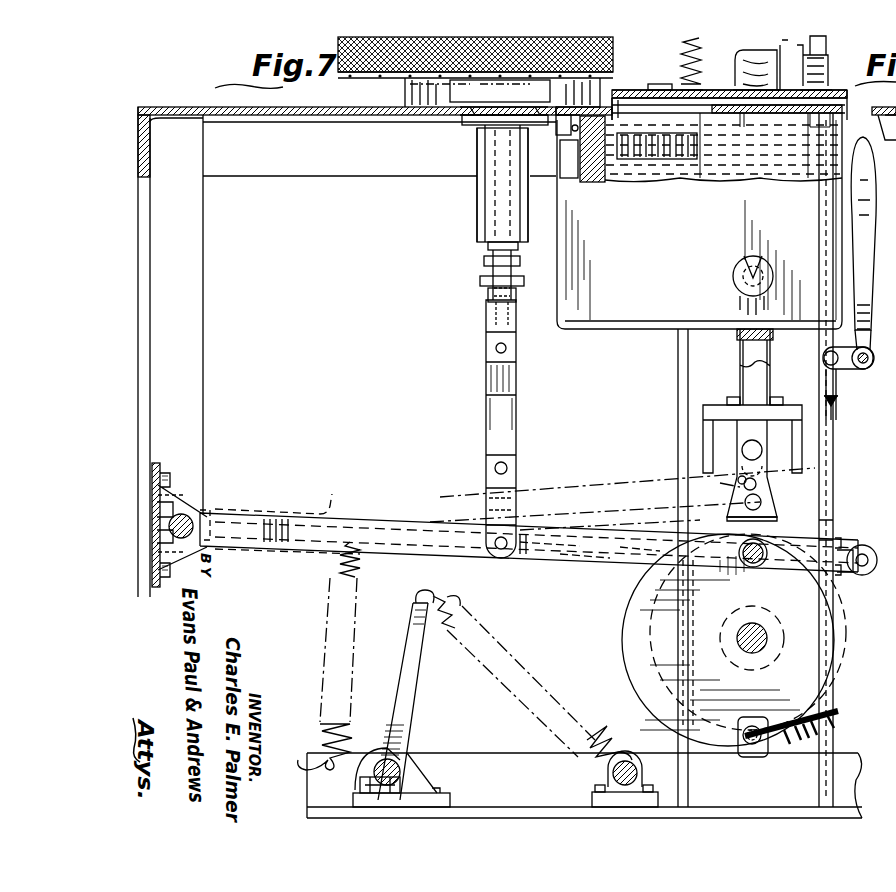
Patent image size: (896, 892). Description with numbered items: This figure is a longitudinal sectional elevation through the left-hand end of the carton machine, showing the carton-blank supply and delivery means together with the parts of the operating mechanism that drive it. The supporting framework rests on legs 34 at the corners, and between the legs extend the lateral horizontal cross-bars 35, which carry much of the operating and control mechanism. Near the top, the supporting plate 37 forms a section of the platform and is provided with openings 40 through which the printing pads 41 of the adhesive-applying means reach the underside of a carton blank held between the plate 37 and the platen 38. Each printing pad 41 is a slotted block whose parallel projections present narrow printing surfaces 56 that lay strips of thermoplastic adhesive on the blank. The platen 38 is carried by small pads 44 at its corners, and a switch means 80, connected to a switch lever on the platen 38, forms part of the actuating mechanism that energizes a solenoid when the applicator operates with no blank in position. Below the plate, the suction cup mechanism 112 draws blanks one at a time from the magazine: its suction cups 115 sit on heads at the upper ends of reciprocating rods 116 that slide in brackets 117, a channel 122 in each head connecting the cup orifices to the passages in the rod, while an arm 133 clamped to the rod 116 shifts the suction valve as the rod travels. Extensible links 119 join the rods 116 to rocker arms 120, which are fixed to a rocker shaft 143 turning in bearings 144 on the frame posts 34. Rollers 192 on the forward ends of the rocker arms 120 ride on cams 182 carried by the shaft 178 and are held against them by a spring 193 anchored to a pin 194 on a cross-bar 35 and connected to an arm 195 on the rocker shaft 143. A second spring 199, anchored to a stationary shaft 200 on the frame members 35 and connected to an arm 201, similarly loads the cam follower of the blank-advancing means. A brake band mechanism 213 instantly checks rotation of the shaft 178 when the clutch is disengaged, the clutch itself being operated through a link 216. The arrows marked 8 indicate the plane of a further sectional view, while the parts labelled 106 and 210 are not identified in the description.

The section line 8- 8 is at (538, 84).
The legs 34 is at (150, 352).
The lateral horizontal cross-bars 35 is at (498, 760).
The supporting plate 37 is at (730, 90).
The platen 38 is at (680, 62).
The openings 40 is at (621, 100).
The printing pads 41 is at (672, 176).
The pads 44 is at (656, 86).
The printing surfaces 56 is at (668, 136).
The switch means 80 is at (820, 70).
The pivot pin 106 is at (408, 752).
The suction cup mechanism 112 is at (474, 236).
The suction cups 115 is at (470, 117).
The reciprocating rods 116 is at (487, 261).
The brackets 117 is at (480, 150).
The links 119 is at (517, 420).
The rocker arms 120 is at (380, 513).
The channel 122 is at (472, 130).
The arm 133 is at (487, 285).
The rocker shaft 143 is at (198, 515).
The bearings 144 is at (180, 492).
The shaft 178 is at (766, 652).
The cams 182 is at (835, 640).
The rollers 192 is at (762, 535).
The spring 193 is at (336, 575).
The pin 194 is at (298, 772).
The arm 195 is at (340, 492).
The spring 199 is at (455, 600).
The stationary shaft 200 is at (612, 770).
The arm 201 is at (418, 680).
The handle 210 is at (868, 270).
The brake band mechanism 213 is at (862, 370).
The link 216 is at (836, 430).